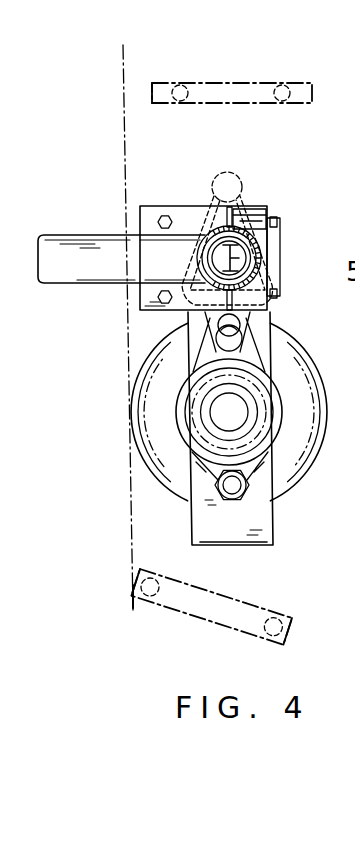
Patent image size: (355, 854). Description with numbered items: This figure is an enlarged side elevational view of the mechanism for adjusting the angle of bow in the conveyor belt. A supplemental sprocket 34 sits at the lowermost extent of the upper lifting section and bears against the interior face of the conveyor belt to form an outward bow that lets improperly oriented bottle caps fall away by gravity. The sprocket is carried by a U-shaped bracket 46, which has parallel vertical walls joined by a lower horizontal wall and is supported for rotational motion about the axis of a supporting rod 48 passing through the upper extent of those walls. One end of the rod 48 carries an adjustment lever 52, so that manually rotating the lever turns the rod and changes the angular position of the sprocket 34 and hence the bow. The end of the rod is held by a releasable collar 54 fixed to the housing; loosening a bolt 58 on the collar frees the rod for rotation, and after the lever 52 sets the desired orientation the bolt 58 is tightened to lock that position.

The supplemental sprocket 34 is at (152, 432).
The U-shaped bracket 46 is at (257, 545).
The supporting rod 48 is at (252, 247).
The adjustment lever 52 is at (67, 273).
The releasable collar 54 is at (230, 168).
The bolt 58 is at (252, 485).